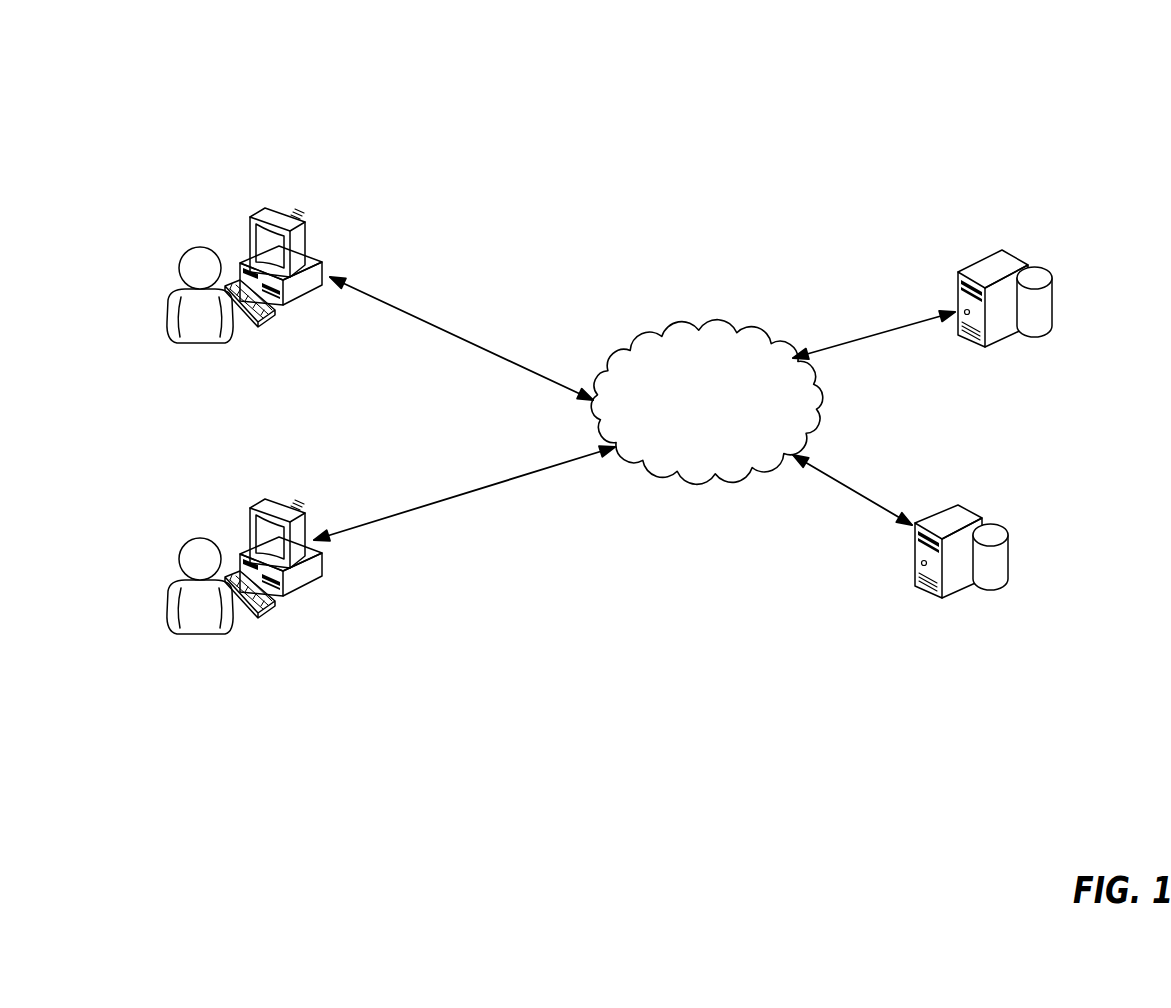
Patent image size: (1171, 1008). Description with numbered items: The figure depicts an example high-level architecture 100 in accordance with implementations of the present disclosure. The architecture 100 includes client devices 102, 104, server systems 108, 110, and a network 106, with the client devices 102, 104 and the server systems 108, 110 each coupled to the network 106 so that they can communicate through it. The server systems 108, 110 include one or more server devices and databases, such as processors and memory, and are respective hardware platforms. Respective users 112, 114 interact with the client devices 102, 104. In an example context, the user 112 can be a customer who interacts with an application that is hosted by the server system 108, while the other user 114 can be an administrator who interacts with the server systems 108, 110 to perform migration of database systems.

The architecture 100 is at (560, 92).
The client device 102 is at (248, 222).
The client device 104 is at (248, 513).
The network 106 is at (709, 329).
The server system 108 is at (1052, 283).
The server system 110 is at (962, 590).
The user 112 is at (202, 344).
The user 114 is at (202, 635).